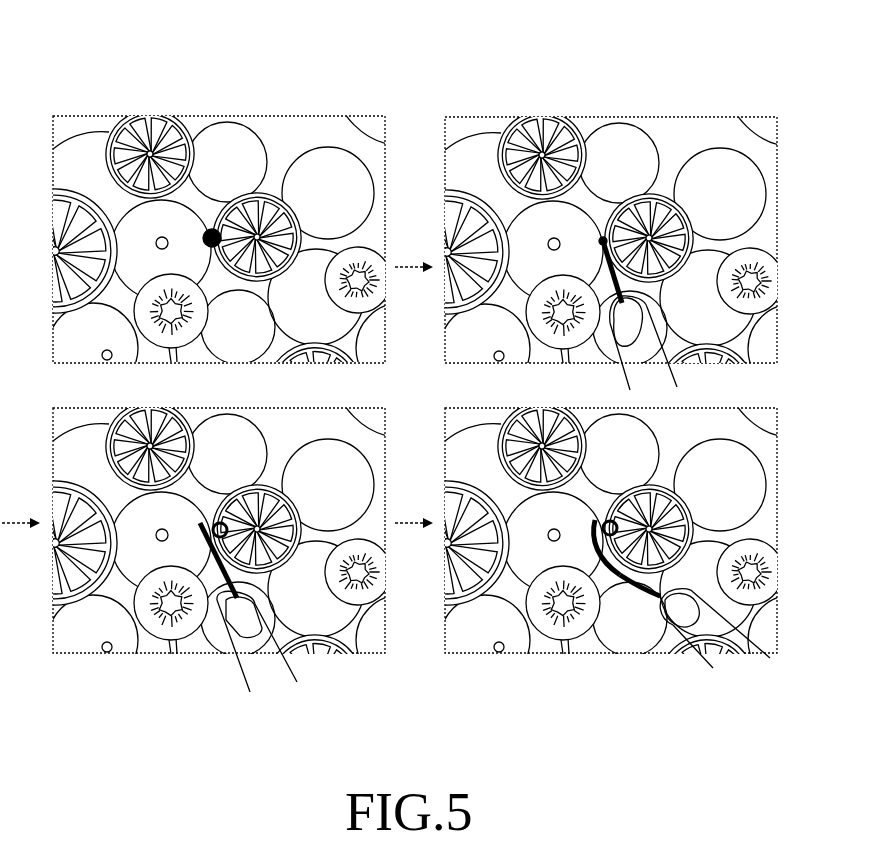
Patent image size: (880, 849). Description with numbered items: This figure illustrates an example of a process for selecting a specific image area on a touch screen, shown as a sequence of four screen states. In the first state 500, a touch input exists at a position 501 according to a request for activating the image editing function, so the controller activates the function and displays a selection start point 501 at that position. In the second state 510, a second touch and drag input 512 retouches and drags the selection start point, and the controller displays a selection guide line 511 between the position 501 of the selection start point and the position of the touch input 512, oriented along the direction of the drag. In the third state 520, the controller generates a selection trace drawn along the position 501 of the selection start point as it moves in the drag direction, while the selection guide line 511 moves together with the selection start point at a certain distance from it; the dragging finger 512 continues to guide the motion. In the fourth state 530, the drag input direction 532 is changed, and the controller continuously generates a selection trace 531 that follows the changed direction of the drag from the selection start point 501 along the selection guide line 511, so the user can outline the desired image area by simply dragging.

The screen with touch input at selection start point 500 is at (208, 117).
The selection start point 501 is at (215, 235).
The screen with second touch and drag input 510 is at (605, 117).
The selection guide line 511 is at (620, 297).
The touch and drag input 512 is at (647, 323).
The screen with selection trace 520 is at (92, 653).
The screen with changed drag direction 530 is at (493, 653).
The selection trace 531 is at (595, 520).
The drag input direction 532 is at (720, 640).